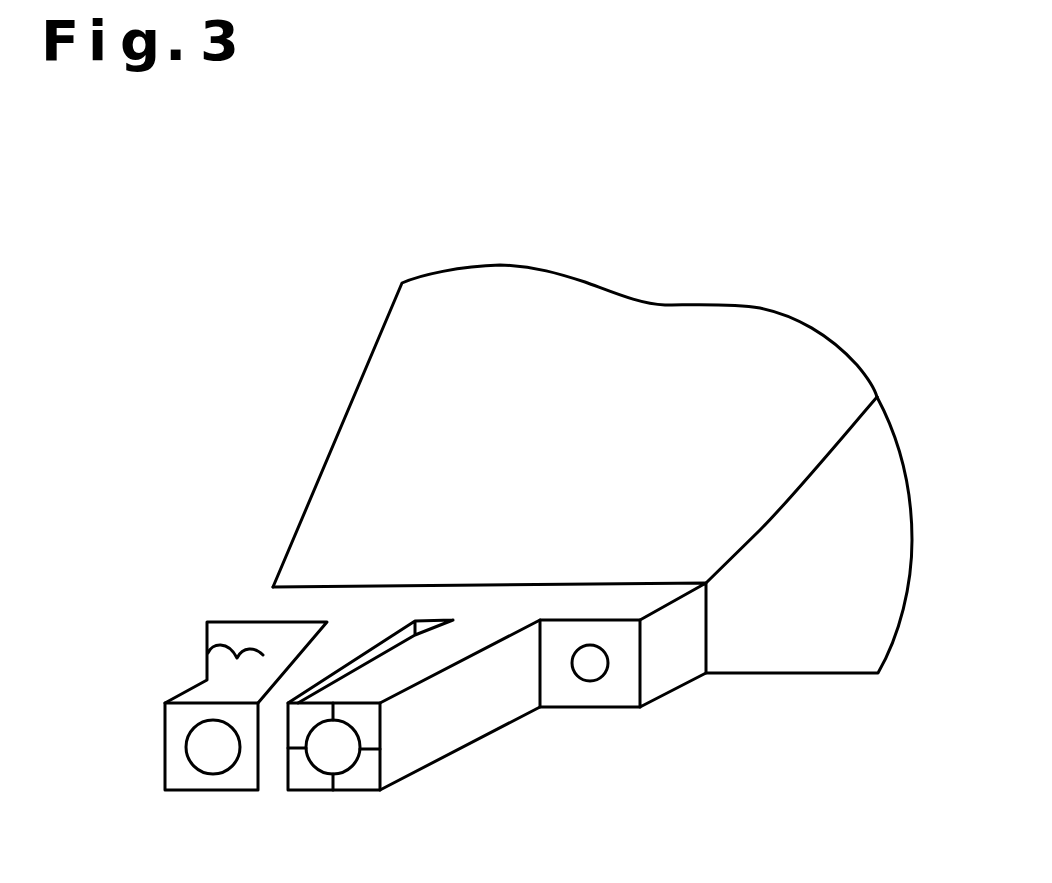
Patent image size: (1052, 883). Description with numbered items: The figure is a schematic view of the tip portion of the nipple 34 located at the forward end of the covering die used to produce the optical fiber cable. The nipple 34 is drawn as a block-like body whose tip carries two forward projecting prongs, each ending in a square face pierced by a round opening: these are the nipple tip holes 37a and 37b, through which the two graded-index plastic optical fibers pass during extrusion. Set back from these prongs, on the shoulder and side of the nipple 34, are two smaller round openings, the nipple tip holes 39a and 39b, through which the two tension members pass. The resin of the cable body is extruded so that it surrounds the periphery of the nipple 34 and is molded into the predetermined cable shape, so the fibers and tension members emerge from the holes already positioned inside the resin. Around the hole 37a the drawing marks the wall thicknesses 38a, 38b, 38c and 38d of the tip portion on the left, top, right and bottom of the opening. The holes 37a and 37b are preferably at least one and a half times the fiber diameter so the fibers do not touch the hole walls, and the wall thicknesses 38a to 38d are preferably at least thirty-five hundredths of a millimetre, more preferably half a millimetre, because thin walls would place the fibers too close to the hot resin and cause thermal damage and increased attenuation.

The nipple 34 is at (357, 452).
The nipple tip hole 37a is at (323, 762).
The nipple tip hole 37b is at (194, 751).
The wall thickness 38a is at (300, 750).
The wall thickness 38b is at (337, 705).
The wall thickness 38c is at (362, 750).
The wall thickness 38d is at (336, 776).
The nipple tip hole 39a is at (597, 675).
The nipple tip hole 39b is at (207, 653).